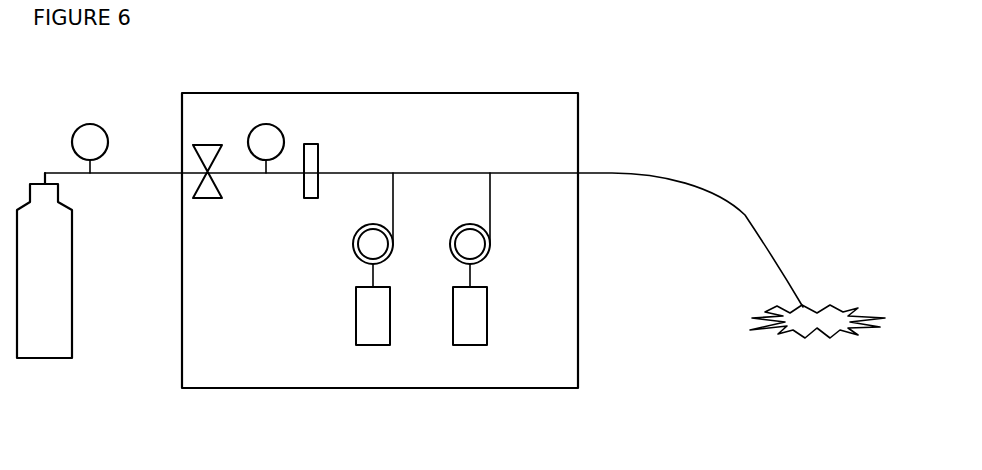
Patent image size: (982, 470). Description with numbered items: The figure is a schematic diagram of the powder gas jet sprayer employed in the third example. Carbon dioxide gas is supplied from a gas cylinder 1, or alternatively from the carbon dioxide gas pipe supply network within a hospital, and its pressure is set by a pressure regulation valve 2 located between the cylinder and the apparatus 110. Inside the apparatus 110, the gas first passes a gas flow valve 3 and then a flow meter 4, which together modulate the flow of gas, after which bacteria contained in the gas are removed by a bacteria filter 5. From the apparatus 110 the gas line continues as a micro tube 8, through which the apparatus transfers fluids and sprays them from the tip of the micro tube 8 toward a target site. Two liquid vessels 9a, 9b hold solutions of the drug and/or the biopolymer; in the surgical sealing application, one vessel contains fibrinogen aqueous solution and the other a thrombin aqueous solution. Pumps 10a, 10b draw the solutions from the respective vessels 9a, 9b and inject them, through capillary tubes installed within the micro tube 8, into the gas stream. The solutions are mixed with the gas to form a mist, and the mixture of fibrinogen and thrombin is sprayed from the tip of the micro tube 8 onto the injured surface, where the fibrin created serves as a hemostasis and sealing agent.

The carbon dioxide gas cylinder 1 is at (45, 346).
The pressure regulation valve 2 is at (88, 134).
The gas flow valve 3 is at (210, 148).
The flow meter 4 is at (266, 138).
The bacteria filter 5 is at (319, 152).
The micro tube 8 is at (722, 198).
The liquid vessel 9a is at (373, 336).
The liquid vessel 9b is at (470, 336).
The pump 10a is at (366, 248).
The pump 10b is at (467, 245).
The powder gas jet sprayer apparatus 110 is at (578, 105).